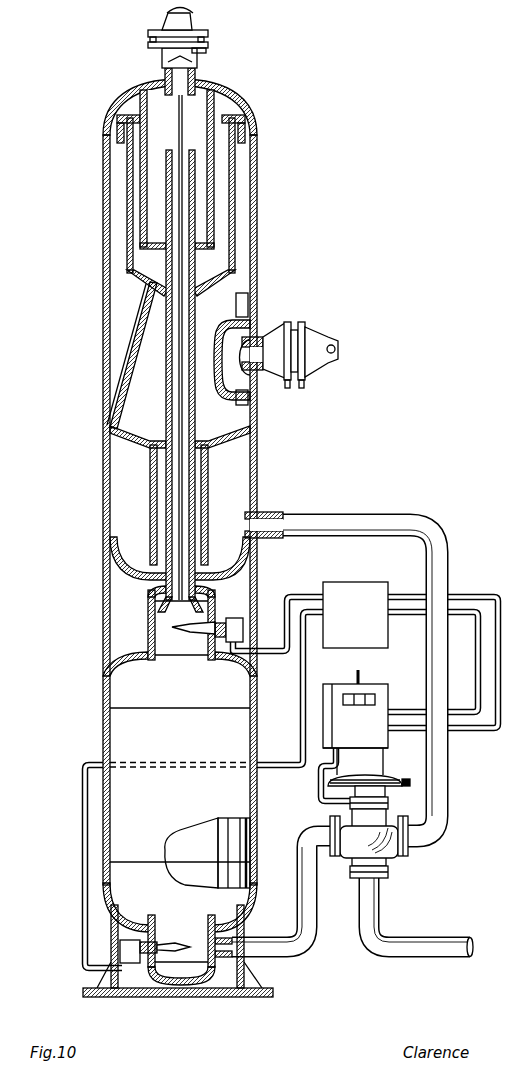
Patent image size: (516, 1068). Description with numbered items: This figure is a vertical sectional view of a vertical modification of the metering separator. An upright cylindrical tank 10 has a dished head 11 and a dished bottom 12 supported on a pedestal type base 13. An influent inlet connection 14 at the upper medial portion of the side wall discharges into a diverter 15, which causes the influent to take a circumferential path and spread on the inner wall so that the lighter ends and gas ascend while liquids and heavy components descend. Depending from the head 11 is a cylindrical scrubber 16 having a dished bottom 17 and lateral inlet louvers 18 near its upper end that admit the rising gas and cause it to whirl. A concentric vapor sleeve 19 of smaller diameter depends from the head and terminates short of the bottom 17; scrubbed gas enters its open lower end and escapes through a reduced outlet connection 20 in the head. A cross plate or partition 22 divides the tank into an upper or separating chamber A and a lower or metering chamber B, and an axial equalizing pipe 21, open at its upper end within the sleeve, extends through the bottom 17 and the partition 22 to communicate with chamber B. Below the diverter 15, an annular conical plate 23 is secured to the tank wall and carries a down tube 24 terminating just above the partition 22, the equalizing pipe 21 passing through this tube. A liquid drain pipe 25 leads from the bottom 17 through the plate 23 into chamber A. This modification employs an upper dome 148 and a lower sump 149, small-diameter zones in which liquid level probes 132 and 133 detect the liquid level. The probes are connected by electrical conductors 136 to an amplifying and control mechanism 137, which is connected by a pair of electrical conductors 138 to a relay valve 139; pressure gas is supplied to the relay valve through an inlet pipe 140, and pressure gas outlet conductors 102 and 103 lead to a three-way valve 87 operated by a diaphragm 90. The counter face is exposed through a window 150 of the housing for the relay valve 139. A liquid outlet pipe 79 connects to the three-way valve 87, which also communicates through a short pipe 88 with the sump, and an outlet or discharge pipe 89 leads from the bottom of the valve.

The tank 10 is at (103, 268).
The dished top or head 11 is at (244, 68).
The dished bottom 12 is at (113, 905).
The pedestal type base 13 is at (250, 903).
The influent inlet connection 14 is at (292, 322).
The diverter 15 is at (226, 392).
The cylindrical scrubber 16 is at (233, 240).
The dished bottom 17 is at (203, 292).
The lateral inlet louvers 18 is at (125, 153).
The concentric vapor sleeve 19 is at (208, 104).
The reduced outlet connection 20 is at (165, 60).
The axial equalizing pipe 21 is at (165, 411).
The cross plate or partition 22 is at (225, 572).
The annular conical plate or partition 23 is at (220, 446).
The down tube 24 is at (150, 488).
The liquid drain pipe 25 is at (140, 322).
The liquid outlet pipe 79 is at (330, 515).
The three-way valve 87 is at (396, 852).
The short pipe 88 is at (318, 896).
The outlet or discharge pipe 89 is at (394, 957).
The diaphragm 90 is at (392, 796).
The pressure gas outlet conductor 102 is at (326, 787).
The pressure gas outlet conductor 103 is at (388, 770).
The probe 132 is at (183, 628).
The probe 133 is at (165, 947).
The electrical conductors 136 is at (287, 596).
The amplifying and control mechanism 137 is at (368, 582).
The electrical conductors 138 is at (476, 680).
The relay valve 139 is at (388, 740).
The inlet pipe 140 is at (357, 672).
The upper dome 148 is at (148, 624).
The lower sump 149 is at (228, 990).
The window 150 is at (375, 700).
The upper or separating chamber A is at (232, 487).
The lower or metering chamber B is at (118, 736).